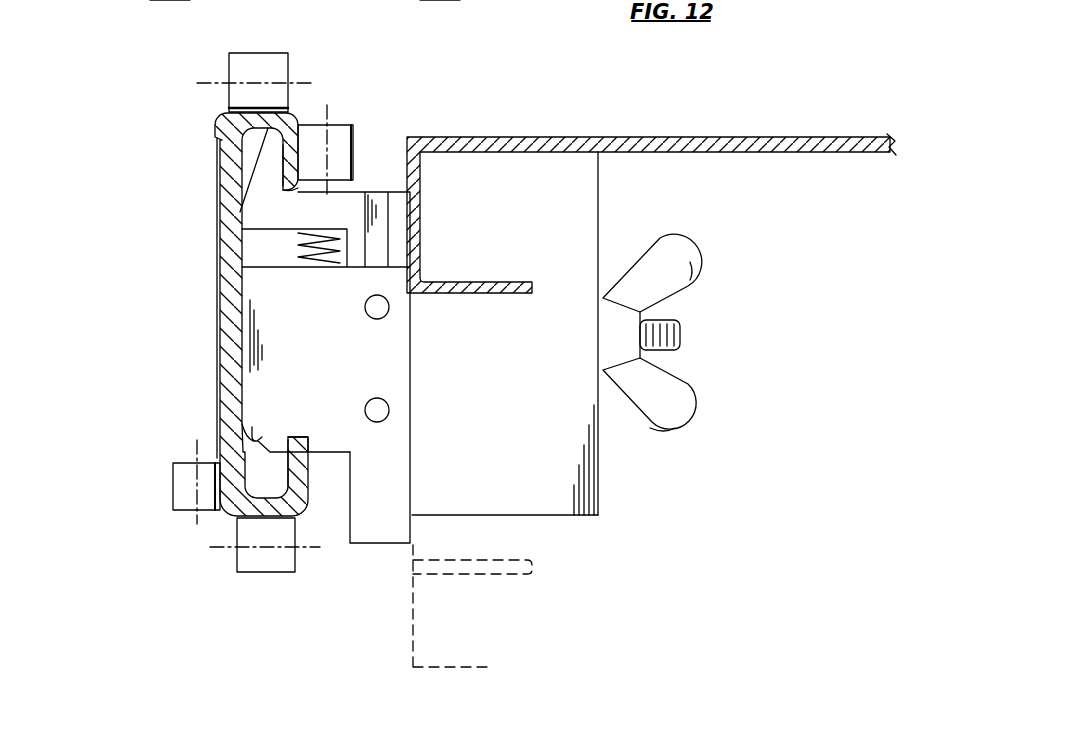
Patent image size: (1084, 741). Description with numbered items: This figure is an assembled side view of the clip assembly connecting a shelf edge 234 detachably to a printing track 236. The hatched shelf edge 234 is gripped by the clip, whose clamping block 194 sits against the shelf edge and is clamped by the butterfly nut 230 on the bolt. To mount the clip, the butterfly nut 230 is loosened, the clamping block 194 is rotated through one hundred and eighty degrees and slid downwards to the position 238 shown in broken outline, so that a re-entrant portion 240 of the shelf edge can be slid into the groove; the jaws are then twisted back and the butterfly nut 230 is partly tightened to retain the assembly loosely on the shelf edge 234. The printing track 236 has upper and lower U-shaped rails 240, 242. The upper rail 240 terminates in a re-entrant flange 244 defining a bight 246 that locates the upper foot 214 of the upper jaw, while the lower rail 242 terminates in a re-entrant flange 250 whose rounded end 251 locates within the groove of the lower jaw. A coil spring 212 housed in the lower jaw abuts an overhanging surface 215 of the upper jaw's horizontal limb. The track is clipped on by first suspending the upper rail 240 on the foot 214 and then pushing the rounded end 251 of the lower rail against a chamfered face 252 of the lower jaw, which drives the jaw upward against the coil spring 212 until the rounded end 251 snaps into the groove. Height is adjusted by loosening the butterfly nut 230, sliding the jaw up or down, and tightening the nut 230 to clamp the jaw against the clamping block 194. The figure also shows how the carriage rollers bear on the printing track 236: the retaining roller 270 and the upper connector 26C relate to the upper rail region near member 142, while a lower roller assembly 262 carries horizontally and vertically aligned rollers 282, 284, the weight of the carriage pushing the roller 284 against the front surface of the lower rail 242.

The frame member 142 is at (168, 6).
The clamping block 194 is at (586, 203).
The coil spring 212 is at (295, 259).
The foot 214 is at (290, 168).
The overhanging surface 215 is at (300, 242).
The butterfly nut 230 is at (698, 415).
The shelf edge 234 is at (445, 133).
The printing track 236 is at (200, 338).
The position indicated in broken outline 238 is at (430, 613).
The upper U-shaped rail 240 is at (208, 108).
The lower U-shaped rail 242 is at (218, 523).
The re-entrant flange 244 is at (287, 165).
The bight 246 is at (245, 152).
The re-entrant flange 250 is at (309, 478).
The rounded end 251 is at (302, 437).
The chamfered face 252 is at (250, 437).
The lower roller assembly 262 is at (439, 6).
The upper connector 26C is at (290, 60).
The retaining roller 270 is at (355, 133).
The roller 282 is at (296, 574).
The roller 284 is at (173, 475).